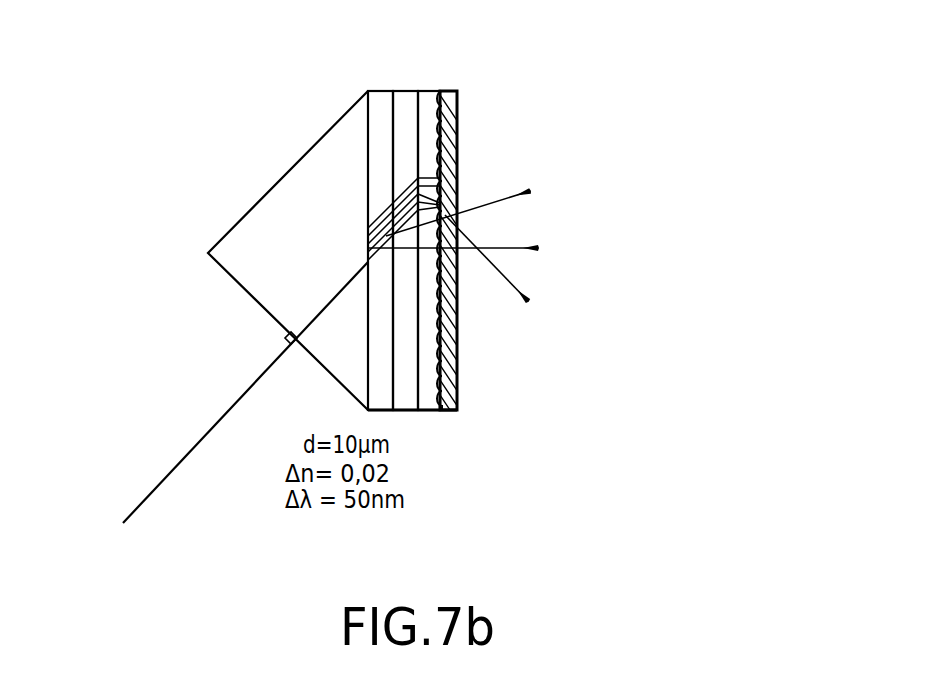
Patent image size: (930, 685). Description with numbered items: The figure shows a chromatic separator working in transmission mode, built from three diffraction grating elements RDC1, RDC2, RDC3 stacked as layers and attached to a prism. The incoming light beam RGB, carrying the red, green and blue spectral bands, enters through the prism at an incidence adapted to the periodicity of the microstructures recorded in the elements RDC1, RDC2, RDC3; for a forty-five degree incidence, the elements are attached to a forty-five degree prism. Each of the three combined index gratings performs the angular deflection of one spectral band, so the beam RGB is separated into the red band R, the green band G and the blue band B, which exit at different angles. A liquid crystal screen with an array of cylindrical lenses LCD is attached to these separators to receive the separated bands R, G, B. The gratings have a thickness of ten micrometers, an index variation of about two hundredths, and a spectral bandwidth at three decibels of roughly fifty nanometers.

The first diffraction grating element RDC1 is at (378, 98).
The second diffraction grating element RDC2 is at (403, 98).
The third diffraction grating element RDC3 is at (432, 100).
The red spectral band R is at (467, 204).
The green spectral band G is at (461, 248).
The blue spectral band B is at (496, 265).
The incident light beam RGB is at (243, 392).
The liquid crystal screen with array of lenses LCD is at (466, 384).